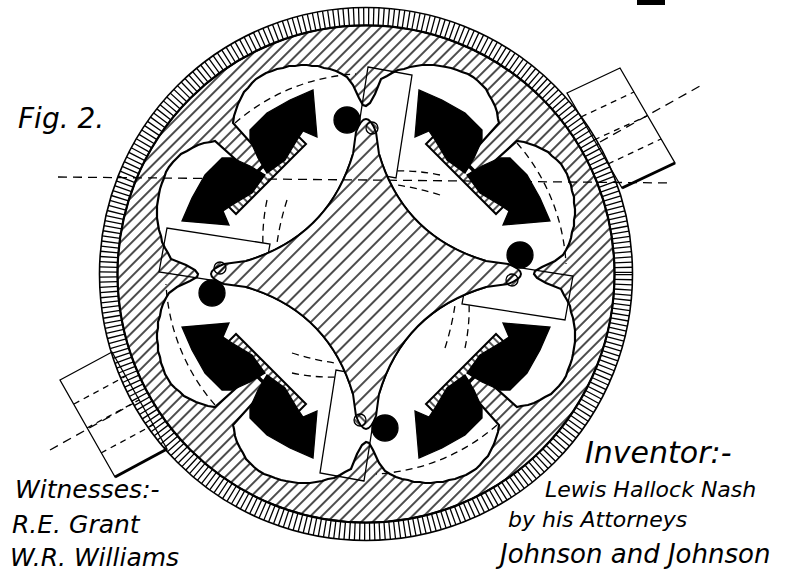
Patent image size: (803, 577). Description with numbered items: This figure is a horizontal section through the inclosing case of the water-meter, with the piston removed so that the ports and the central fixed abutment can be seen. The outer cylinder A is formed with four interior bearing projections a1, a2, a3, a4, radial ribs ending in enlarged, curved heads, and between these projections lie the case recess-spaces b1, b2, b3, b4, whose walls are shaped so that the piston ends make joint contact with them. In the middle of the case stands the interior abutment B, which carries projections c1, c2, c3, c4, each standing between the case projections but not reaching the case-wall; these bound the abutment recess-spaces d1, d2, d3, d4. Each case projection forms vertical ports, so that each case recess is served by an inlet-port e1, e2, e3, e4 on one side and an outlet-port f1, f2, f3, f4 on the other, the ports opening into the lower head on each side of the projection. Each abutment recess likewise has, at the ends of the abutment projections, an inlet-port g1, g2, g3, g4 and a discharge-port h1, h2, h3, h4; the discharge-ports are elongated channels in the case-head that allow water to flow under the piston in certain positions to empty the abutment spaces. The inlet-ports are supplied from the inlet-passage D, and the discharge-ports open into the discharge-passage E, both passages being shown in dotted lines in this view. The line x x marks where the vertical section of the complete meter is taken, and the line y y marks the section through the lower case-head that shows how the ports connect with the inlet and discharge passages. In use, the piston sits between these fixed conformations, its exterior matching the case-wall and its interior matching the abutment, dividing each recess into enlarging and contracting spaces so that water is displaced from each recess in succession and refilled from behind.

The cylinder A is at (366, 274).
The interior abutment B is at (366, 274).
The inlet-passage D is at (621, 128).
The discharge-passage E is at (113, 414).
The section line x x is at (367, 272).
The section line y y is at (365, 181).
The interior bearing projection a1 is at (466, 174).
The interior bearing projection a2 is at (466, 374).
The interior bearing projection a3 is at (266, 373).
The interior bearing projection a4 is at (266, 174).
The case recess-space b1 is at (493, 164).
The case recess-space b2 is at (481, 364).
The case recess-space b3 is at (273, 389).
The case recess-space b4 is at (250, 186).
The abutment projection c1 is at (375, 132).
The abutment projection c2 is at (505, 275).
The abutment projection c3 is at (359, 415).
The abutment projection c4 is at (222, 272).
The abutment recess-space d1 is at (432, 207).
The abutment recess-space d2 is at (432, 340).
The abutment recess-space d3 is at (299, 340).
The abutment recess-space d4 is at (299, 207).
The case inlet-port e1 is at (508, 191).
The case inlet-port e2 is at (217, 356).
The case inlet-port e3 is at (448, 417).
The case inlet-port e4 is at (283, 129).
The case outlet-port f1 is at (448, 131).
The case outlet-port f2 is at (508, 356).
The case outlet-port f3 is at (283, 416).
The case outlet-port f4 is at (223, 191).
The abutment inlet-port g1 is at (512, 252).
The abutment inlet-port g2 is at (385, 416).
The abutment inlet-port g3 is at (223, 293).
The abutment inlet-port g4 is at (340, 118).
The abutment discharge-port h1 is at (382, 122).
The abutment discharge-port h2 is at (517, 290).
The abutment discharge-port h3 is at (350, 425).
The abutment discharge-port h4 is at (214, 258).